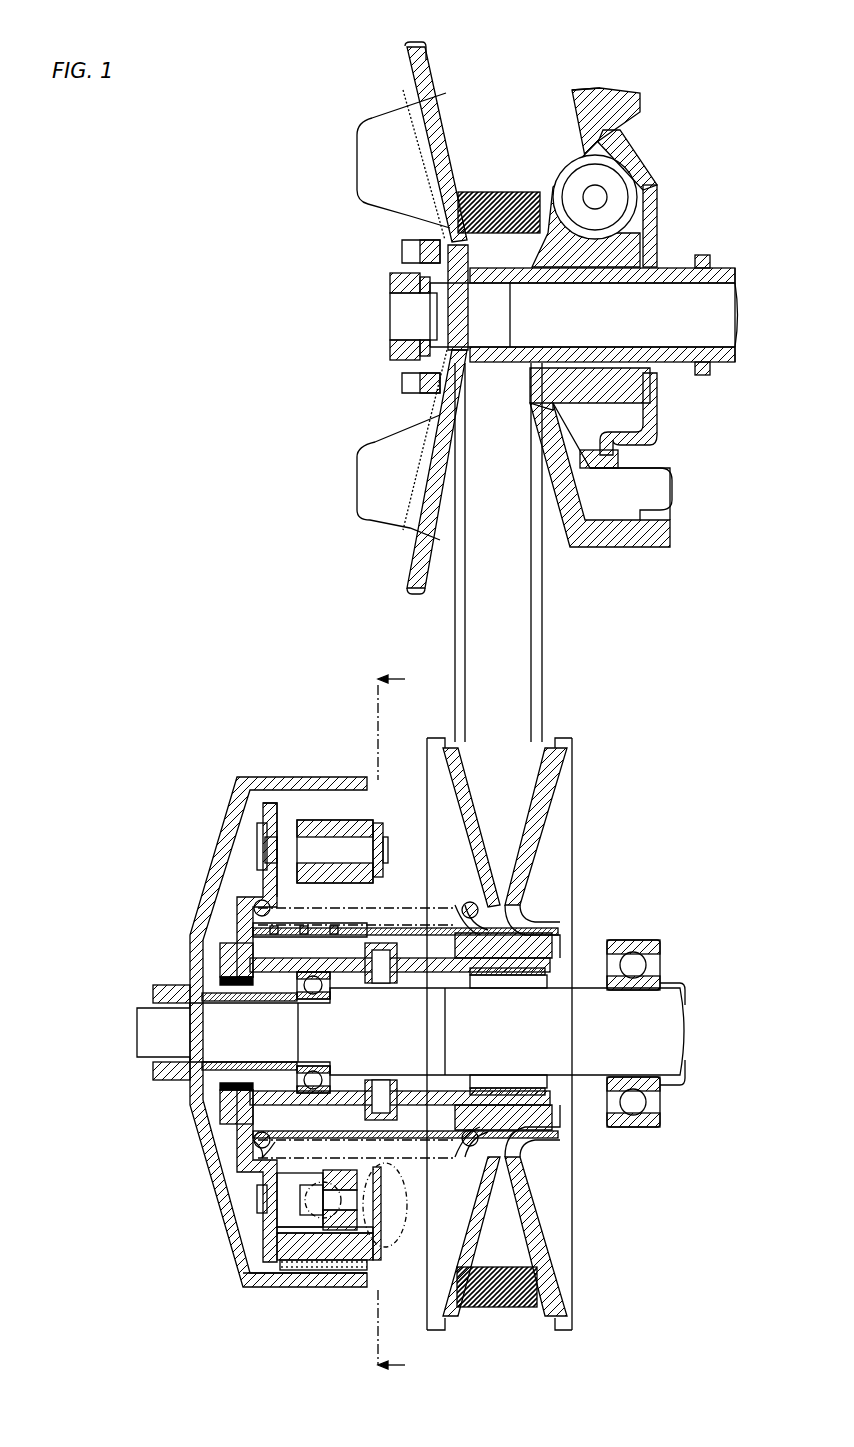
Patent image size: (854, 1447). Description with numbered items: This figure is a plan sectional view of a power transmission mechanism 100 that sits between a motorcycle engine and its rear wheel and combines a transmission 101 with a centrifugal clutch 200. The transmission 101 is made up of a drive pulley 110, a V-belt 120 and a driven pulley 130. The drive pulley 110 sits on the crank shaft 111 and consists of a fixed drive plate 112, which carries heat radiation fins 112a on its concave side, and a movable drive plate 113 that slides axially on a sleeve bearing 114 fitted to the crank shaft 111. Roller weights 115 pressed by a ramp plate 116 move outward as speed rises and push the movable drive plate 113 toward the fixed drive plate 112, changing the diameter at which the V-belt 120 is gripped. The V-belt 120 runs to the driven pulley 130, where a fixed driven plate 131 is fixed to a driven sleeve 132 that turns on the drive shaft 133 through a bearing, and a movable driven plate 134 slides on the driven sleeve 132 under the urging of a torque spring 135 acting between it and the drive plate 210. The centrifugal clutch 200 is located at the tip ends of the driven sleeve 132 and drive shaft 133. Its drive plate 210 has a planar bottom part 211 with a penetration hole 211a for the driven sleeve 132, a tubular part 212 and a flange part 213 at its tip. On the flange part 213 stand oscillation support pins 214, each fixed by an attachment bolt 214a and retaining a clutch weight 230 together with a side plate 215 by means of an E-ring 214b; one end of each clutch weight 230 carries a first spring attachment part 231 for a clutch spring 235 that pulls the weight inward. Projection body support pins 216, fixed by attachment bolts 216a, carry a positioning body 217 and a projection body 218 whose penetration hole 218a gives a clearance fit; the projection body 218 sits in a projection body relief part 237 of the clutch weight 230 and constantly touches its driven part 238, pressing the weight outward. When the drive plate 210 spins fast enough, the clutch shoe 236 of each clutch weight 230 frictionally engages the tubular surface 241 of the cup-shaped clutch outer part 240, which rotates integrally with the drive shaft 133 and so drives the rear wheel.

The power transmission mechanism 100 is at (205, 276).
The transmission 101 is at (660, 103).
The drive pulley 110 is at (547, 46).
The crank shaft 111 is at (725, 317).
The fixed drive plate 112 is at (432, 113).
The heat radiation fin 112a is at (357, 152).
The movable drive plate 113 is at (560, 120).
The sleeve bearing 114 is at (495, 365).
The roller weight 115 is at (635, 150).
The ramp plate 116 is at (655, 215).
The V-belt 120 is at (497, 192).
The driven pulley 130 is at (650, 680).
The fixed driven plate 131 is at (563, 735).
The driven sleeve 132 is at (553, 950).
The drive shaft 133 is at (680, 1034).
The movable driven plate 134 is at (433, 736).
The torque spring 135 is at (447, 903).
The centrifugal clutch 200 is at (177, 792).
The drive plate 210 is at (237, 909).
The bottom part 211 is at (243, 945).
The penetration hole 211a is at (225, 980).
The tubular part 212 is at (296, 1016).
The flange part 213 is at (282, 805).
The oscillation support pin 214 is at (308, 820).
The attachment bolt 214a is at (258, 847).
The E-ring 214b is at (380, 872).
The side plate 215 is at (380, 823).
The projection body support pin 216 is at (300, 1230).
The attachment bolt 216a is at (262, 1200).
The positioning body 217 is at (333, 1170).
The projection body 218 is at (315, 1149).
The penetration hole 218a is at (318, 1190).
The clutch weight 230 is at (337, 820).
The first spring attachment part 231 is at (315, 860).
The clutch spring 235 is at (364, 1205).
The clutch shoe 236 is at (373, 1268).
The projection body relief part 237 is at (288, 1265).
The driven part 238 is at (330, 1270).
The clutch outer part 240 is at (232, 808).
The tubular surface 241 is at (262, 1272).